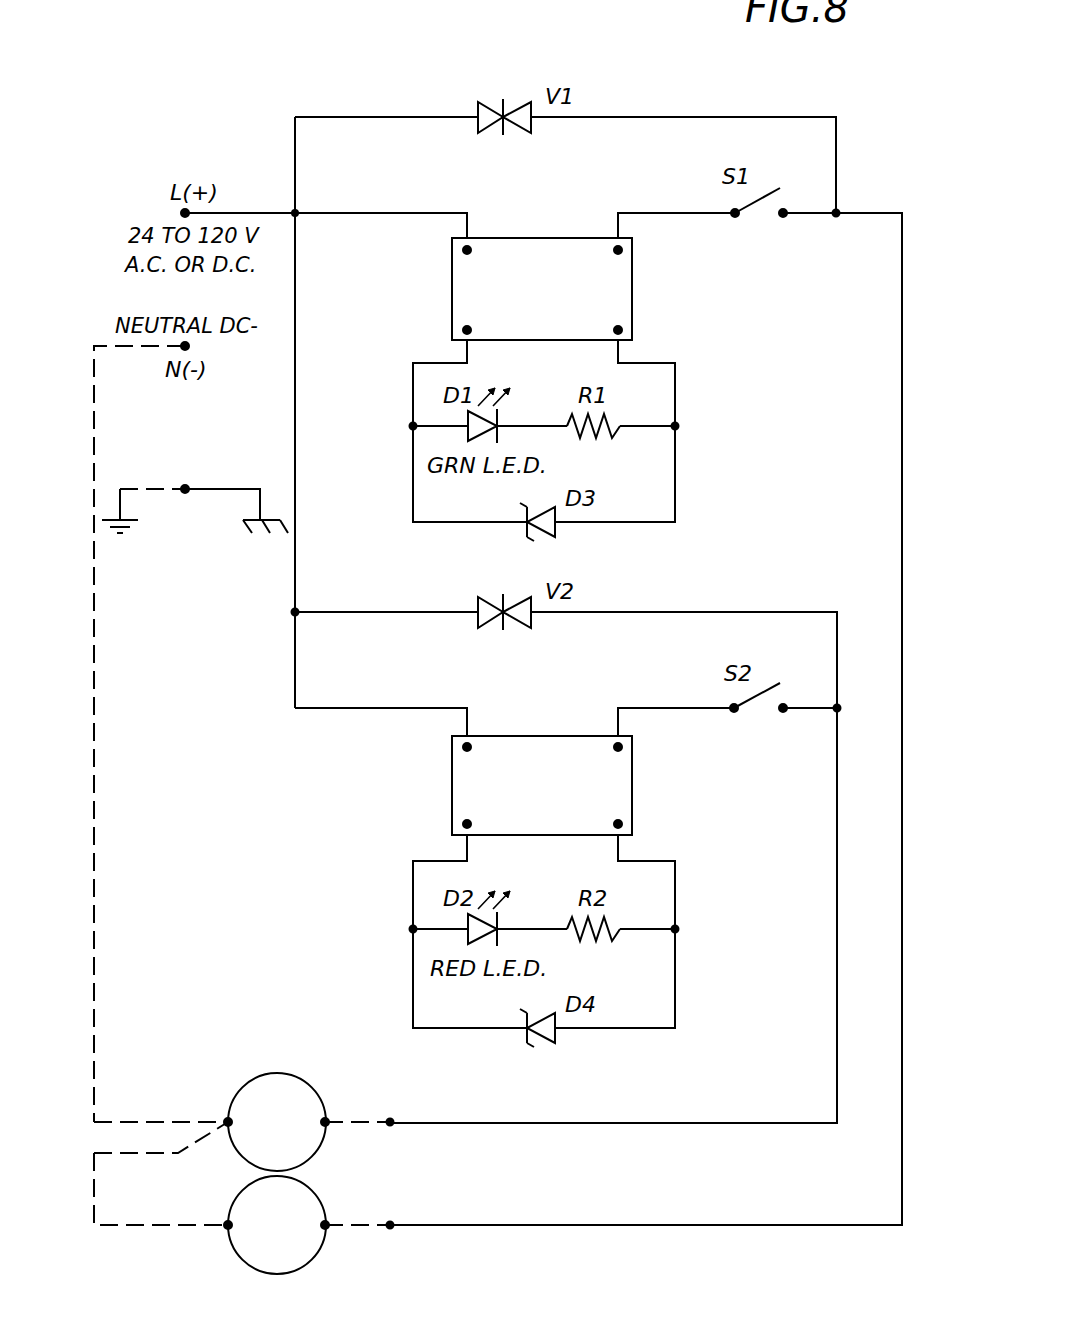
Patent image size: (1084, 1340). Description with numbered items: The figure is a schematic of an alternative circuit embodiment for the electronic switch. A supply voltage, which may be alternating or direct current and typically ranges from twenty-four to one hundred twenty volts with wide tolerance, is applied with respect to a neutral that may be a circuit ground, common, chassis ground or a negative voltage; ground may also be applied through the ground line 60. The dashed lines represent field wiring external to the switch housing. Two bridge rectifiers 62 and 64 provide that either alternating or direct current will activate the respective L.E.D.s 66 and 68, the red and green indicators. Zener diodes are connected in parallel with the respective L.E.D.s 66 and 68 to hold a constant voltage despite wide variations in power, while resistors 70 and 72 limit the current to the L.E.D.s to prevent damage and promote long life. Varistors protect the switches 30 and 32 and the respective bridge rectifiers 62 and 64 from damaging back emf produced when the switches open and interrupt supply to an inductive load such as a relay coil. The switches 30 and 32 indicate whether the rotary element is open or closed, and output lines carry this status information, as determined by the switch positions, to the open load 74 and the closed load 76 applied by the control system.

The switch 30 is at (758, 694).
The switch 32 is at (759, 199).
The ground line 60 is at (227, 489).
The bridge rectifier 62 is at (545, 736).
The bridge rectifier 64 is at (546, 238).
The L.E.D. 66 is at (462, 921).
The L.E.D. 68 is at (462, 418).
The resistor 70 is at (612, 432).
The resistor 72 is at (610, 935).
The open load 74 is at (262, 1072).
The closed load 76 is at (243, 1262).